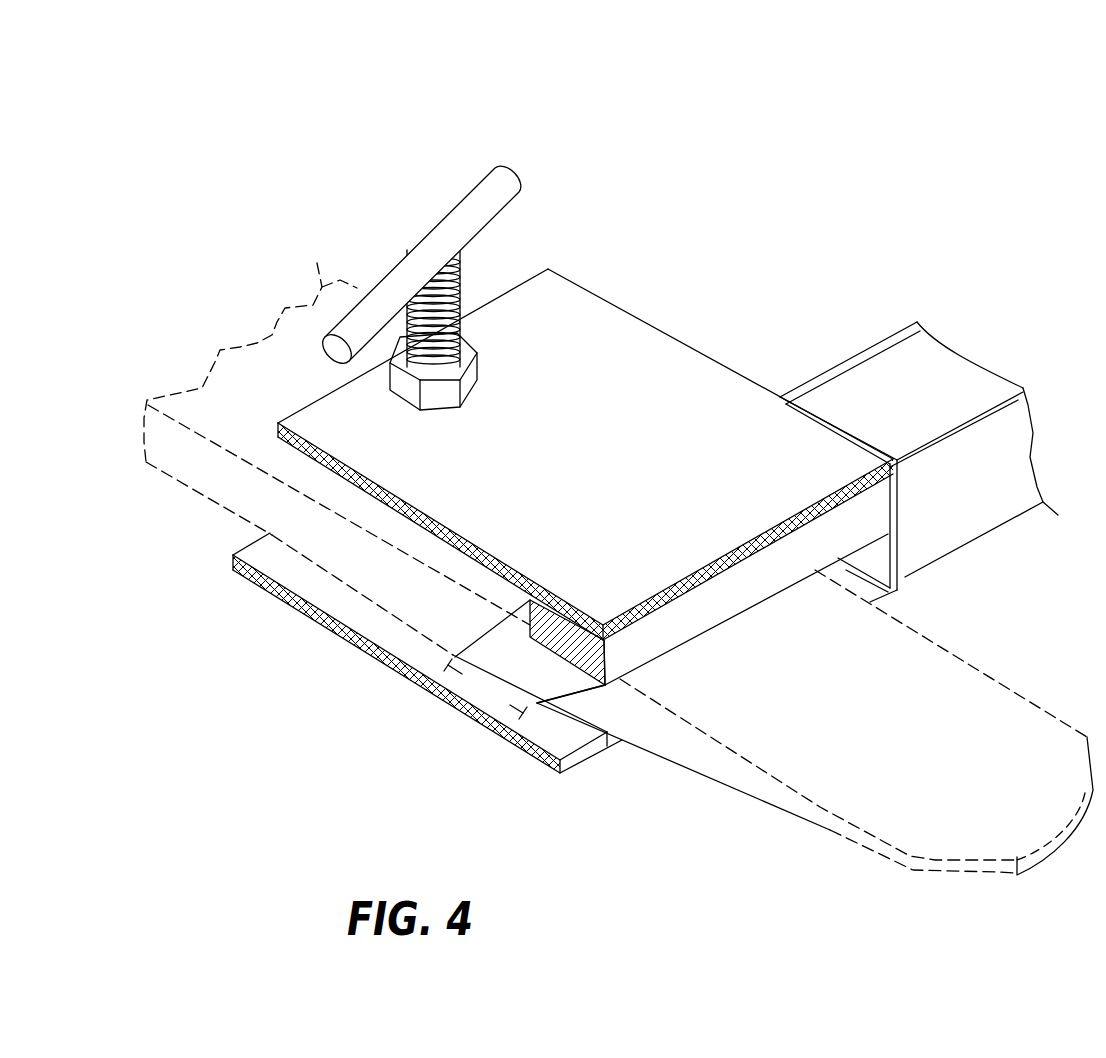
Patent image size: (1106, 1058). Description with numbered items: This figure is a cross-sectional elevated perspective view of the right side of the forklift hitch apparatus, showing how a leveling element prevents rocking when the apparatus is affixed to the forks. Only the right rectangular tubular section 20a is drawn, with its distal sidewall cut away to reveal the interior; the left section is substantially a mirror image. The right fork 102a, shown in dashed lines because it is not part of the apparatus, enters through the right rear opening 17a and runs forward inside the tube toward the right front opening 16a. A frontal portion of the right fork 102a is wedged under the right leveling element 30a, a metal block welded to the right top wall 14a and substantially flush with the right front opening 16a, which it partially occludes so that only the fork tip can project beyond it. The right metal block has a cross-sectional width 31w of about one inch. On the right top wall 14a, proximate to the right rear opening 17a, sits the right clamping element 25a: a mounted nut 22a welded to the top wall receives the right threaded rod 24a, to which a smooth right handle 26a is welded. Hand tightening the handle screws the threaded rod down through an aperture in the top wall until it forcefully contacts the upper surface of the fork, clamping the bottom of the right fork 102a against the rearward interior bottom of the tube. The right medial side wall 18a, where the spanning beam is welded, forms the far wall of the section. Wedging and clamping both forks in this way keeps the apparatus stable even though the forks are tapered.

The right rectangular tubular section 20a is at (658, 125).
The right clamping element 25a is at (347, 208).
The right handle 26a is at (432, 240).
The right threaded rod 24a is at (450, 333).
The mounted nut 22a is at (397, 393).
The right rear opening 17a is at (507, 287).
The right medial side wall 18a is at (682, 345).
The right top wall 14a is at (610, 437).
The right leveling element 30a is at (738, 620).
The cross-sectional width 31w is at (524, 659).
The right front opening 16a is at (897, 590).
The right fork 102a is at (979, 784).